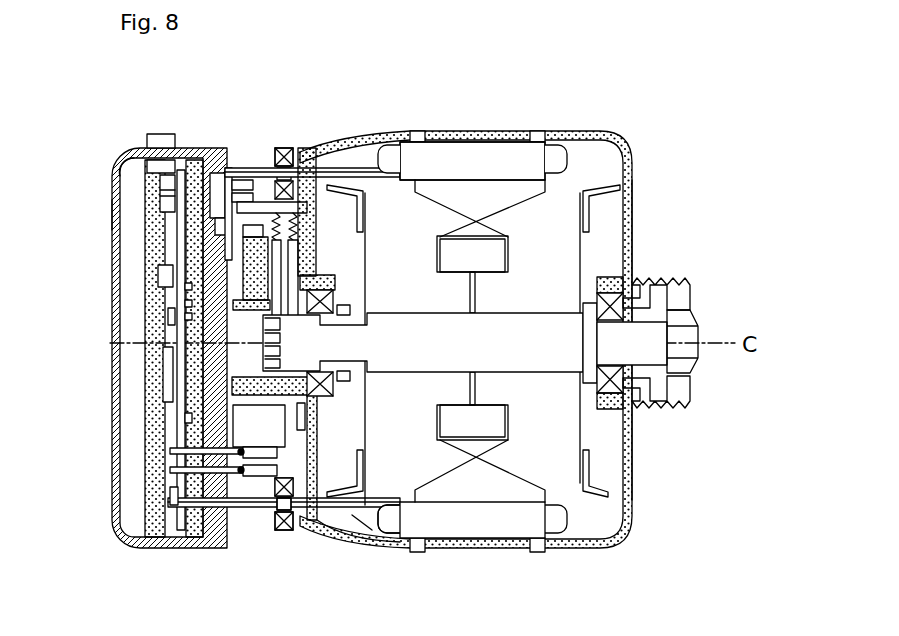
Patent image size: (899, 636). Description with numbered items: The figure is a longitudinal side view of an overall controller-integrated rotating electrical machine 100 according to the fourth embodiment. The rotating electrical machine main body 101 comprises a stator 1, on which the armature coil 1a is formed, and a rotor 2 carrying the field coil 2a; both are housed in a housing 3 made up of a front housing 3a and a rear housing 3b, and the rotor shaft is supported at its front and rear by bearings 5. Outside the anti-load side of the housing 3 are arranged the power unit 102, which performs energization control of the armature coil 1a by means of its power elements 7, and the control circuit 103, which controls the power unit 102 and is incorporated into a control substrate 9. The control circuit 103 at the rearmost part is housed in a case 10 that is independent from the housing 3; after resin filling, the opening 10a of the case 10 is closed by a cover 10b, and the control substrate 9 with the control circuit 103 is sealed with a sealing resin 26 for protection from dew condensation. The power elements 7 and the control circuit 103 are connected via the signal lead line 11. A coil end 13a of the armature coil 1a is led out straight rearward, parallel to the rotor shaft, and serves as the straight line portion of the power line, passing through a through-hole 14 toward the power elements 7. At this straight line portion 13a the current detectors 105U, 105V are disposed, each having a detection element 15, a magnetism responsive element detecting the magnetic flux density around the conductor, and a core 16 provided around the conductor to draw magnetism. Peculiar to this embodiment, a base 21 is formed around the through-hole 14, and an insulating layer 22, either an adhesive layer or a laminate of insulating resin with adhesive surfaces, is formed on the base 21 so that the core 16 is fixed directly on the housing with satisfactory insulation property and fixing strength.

The stator 1 is at (485, 153).
The armature coil 1a is at (575, 150).
The rotor 2 is at (523, 482).
The field coil 2a is at (477, 443).
The housing 3 is at (325, 150).
The front housing 3a is at (632, 195).
The rear housing 3b is at (410, 131).
The bearing 5 is at (618, 303).
The power elements / inverter module 7 is at (342, 193).
The control substrate 9 is at (173, 330).
The case 10 is at (125, 170).
The opening 10a is at (122, 160).
The cover 10b is at (113, 212).
The signal lead line 11 is at (238, 450).
The coil end / straight line portion 13a is at (370, 160).
The through-hole 14 is at (355, 538).
The detection element 15 is at (230, 542).
The core 16 is at (281, 531).
The base 21 is at (325, 535).
The insulating layer 22 is at (295, 148).
The sealing resin 26 is at (150, 252).
The controller-integrated rotating electrical machine 100 is at (257, 137).
The rotating electrical machine main body 101 is at (480, 137).
The power unit 102 is at (255, 440).
The control circuit 103 is at (157, 293).
The current detector 105U is at (267, 527).
The current detector 105V is at (257, 158).